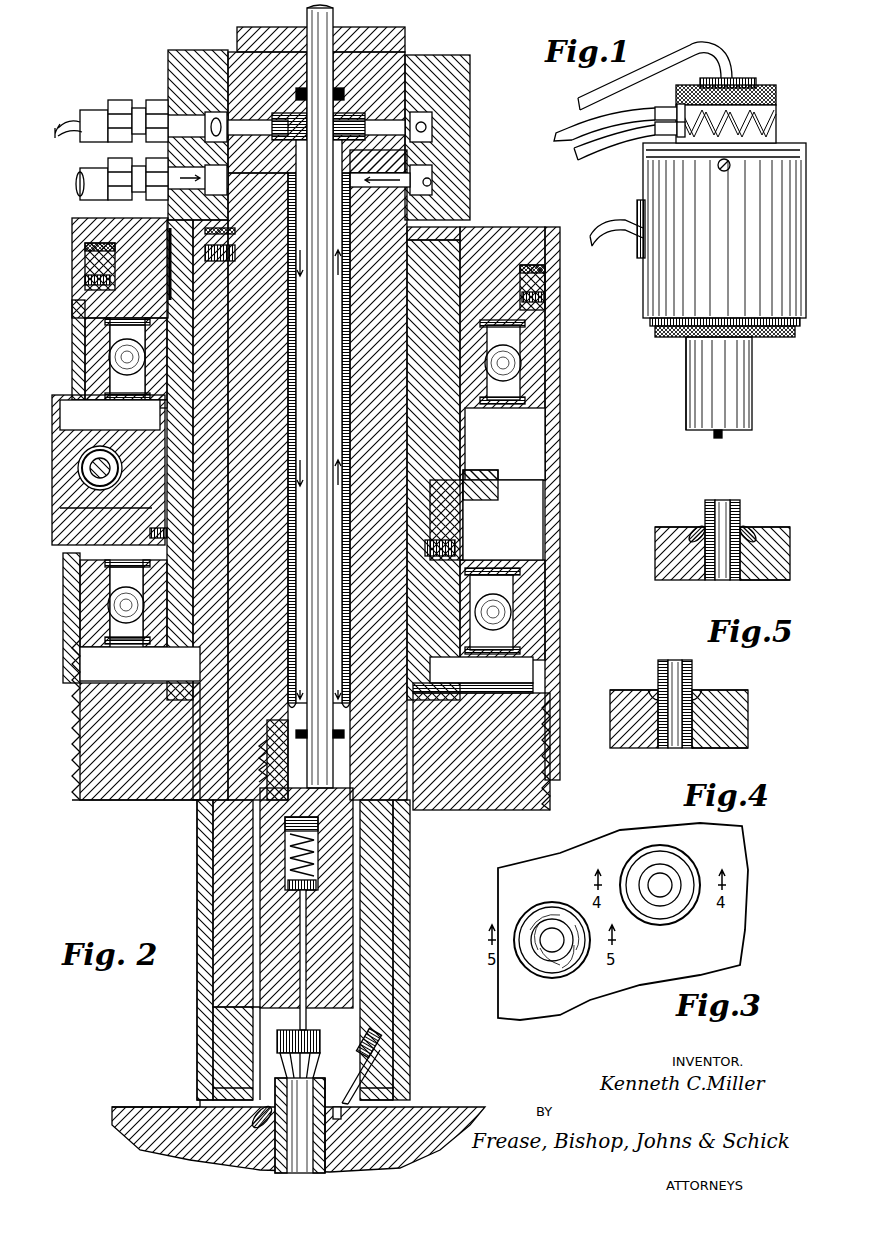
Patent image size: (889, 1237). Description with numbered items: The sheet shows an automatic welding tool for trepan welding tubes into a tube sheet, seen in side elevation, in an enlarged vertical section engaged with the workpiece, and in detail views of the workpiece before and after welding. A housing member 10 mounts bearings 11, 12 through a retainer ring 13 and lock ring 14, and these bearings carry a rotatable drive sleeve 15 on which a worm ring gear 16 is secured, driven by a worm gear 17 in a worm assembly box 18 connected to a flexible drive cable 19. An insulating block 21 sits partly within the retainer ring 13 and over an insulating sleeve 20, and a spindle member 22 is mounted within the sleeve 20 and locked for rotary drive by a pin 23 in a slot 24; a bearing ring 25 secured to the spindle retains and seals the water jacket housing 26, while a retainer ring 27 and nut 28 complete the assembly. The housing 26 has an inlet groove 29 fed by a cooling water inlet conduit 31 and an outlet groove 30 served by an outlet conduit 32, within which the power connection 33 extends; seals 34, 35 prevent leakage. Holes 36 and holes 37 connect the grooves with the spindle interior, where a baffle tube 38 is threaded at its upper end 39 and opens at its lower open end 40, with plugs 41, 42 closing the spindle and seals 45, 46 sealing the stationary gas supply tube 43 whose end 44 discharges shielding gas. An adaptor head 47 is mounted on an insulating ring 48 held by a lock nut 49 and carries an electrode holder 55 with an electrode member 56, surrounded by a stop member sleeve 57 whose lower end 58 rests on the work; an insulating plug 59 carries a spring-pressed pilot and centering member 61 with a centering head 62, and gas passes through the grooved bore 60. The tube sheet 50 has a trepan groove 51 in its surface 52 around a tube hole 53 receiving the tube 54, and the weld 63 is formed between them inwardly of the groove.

In FIG. 2, the housing member 10 is at (560, 512).
In FIG. 1, the housing member 10 is at (805, 310).
In FIG. 2, the bearing 11 is at (525, 600).
In FIG. 2, the bearing 12 is at (528, 360).
In FIG. 2, the retainer ring 13 is at (98, 262).
In FIG. 2, the lock ring 14 is at (80, 680).
In FIG. 2, the drive sleeve 15 is at (148, 505).
In FIG. 2, the worm ring gear 16 is at (500, 487).
In FIG. 2, the worm gear 17 is at (90, 480).
In FIG. 2, the worm assembly box 18 is at (82, 440).
In FIG. 2, the flexible drive cable 19 is at (100, 468).
In FIG. 1, the flexible drive cable 19 is at (597, 242).
In FIG. 2, the insulating sleeve 20 is at (470, 447).
In FIG. 2, the insulating block 21 is at (500, 229).
In FIG. 2, the spindle member 22 is at (458, 542).
In FIG. 2, the pin 23 is at (205, 262).
In FIG. 2, the slot 24 is at (205, 241).
In FIG. 2, the bearing ring 25 is at (433, 470).
In FIG. 2, the water jacket housing 26 is at (433, 128).
In FIG. 1, the water jacket housing 26 is at (776, 122).
In FIG. 2, the retainer ring 27 is at (425, 700).
In FIG. 2, the nut 28 is at (470, 58).
In FIG. 1, the nut 28 is at (776, 93).
In FIG. 2, the inlet groove 29 is at (433, 183).
In FIG. 2, the outlet groove 30 is at (432, 118).
In FIG. 2, the cooling water inlet conduit 31 is at (88, 186).
In FIG. 1, the cooling water inlet conduit 31 is at (600, 147).
In FIG. 2, the outlet conduit 32 is at (92, 112).
In FIG. 1, the outlet conduit 32 is at (595, 118).
In FIG. 2, the power connection 33 is at (62, 126).
In FIG. 1, the power connection 33 is at (560, 138).
In FIG. 2, the seal 34 is at (410, 100).
In FIG. 2, the seal 35 is at (442, 229).
In FIG. 2, the holes 36 is at (380, 190).
In FIG. 2, the holes 37 is at (383, 122).
In FIG. 2, the baffle tube 38 is at (288, 340).
In FIG. 2, the upper end 39 is at (360, 150).
In FIG. 2, the open end 40 is at (292, 690).
In FIG. 2, the plug 41 is at (240, 34).
In FIG. 1, the plug 41 is at (745, 78).
In FIG. 2, the plug 42 is at (233, 950).
In FIG. 2, the gas supply tube 43 is at (309, 22).
In FIG. 1, the gas supply tube 43 is at (710, 48).
In FIG. 2, the end 44 is at (355, 792).
In FIG. 2, the seal 45 is at (342, 110).
In FIG. 2, the seal 46 is at (262, 742).
In FIG. 2, the adaptor head 47 is at (420, 873).
In FIG. 1, the adaptor head 47 is at (765, 409).
In FIG. 2, the insulating ring 48 is at (520, 812).
In FIG. 1, the insulating ring 48 is at (668, 337).
In FIG. 2, the lock nut 49 is at (550, 764).
In FIG. 1, the lock nut 49 is at (650, 318).
In FIG. 2, the tube sheet 50 is at (150, 1138).
In FIG. 5, the tube sheet 50 is at (665, 568).
In FIG. 4, the tube sheet 50 is at (748, 722).
In FIG. 3, the tube sheet 50 is at (598, 1003).
In FIG. 2, the trepan groove 51 is at (343, 1118).
In FIG. 5, the trepan groove 51 is at (770, 530).
In FIG. 4, the trepan groove 51 is at (718, 690).
In FIG. 3, the trepan groove 51 is at (545, 905).
In FIG. 2, the surface 52 is at (160, 1107).
In FIG. 5, the surface 52 is at (670, 527).
In FIG. 4, the surface 52 is at (628, 690).
In FIG. 2, the tube hole 53 is at (322, 1140).
In FIG. 5, the tube hole 53 is at (745, 572).
In FIG. 4, the tube hole 53 is at (695, 740).
In FIG. 2, the tube 54 is at (275, 1145).
In FIG. 5, the tube 54 is at (708, 575).
In FIG. 4, the tube 54 is at (665, 745).
In FIG. 3, the tube 54 is at (664, 878).
In FIG. 2, the electrode holder 55 is at (380, 963).
In FIG. 2, the electrode member 56 is at (380, 1048).
In FIG. 2, the stop member sleeve 57 is at (197, 1008).
In FIG. 1, the stop member sleeve 57 is at (686, 415).
In FIG. 2, the lower end 58 is at (198, 1103).
In FIG. 2, the insulating plug 59 is at (270, 935).
In FIG. 2, the grooved bore 60 is at (255, 1032).
In FIG. 2, the pilot and centering member 61 is at (322, 1040).
In FIG. 2, the centering head 62 is at (318, 1058).
In FIG. 1, the centering head 62 is at (716, 438).
In FIG. 2, the weld 63 is at (258, 1108).
In FIG. 5, the weld 63 is at (697, 527).
In FIG. 3, the weld 63 is at (538, 962).